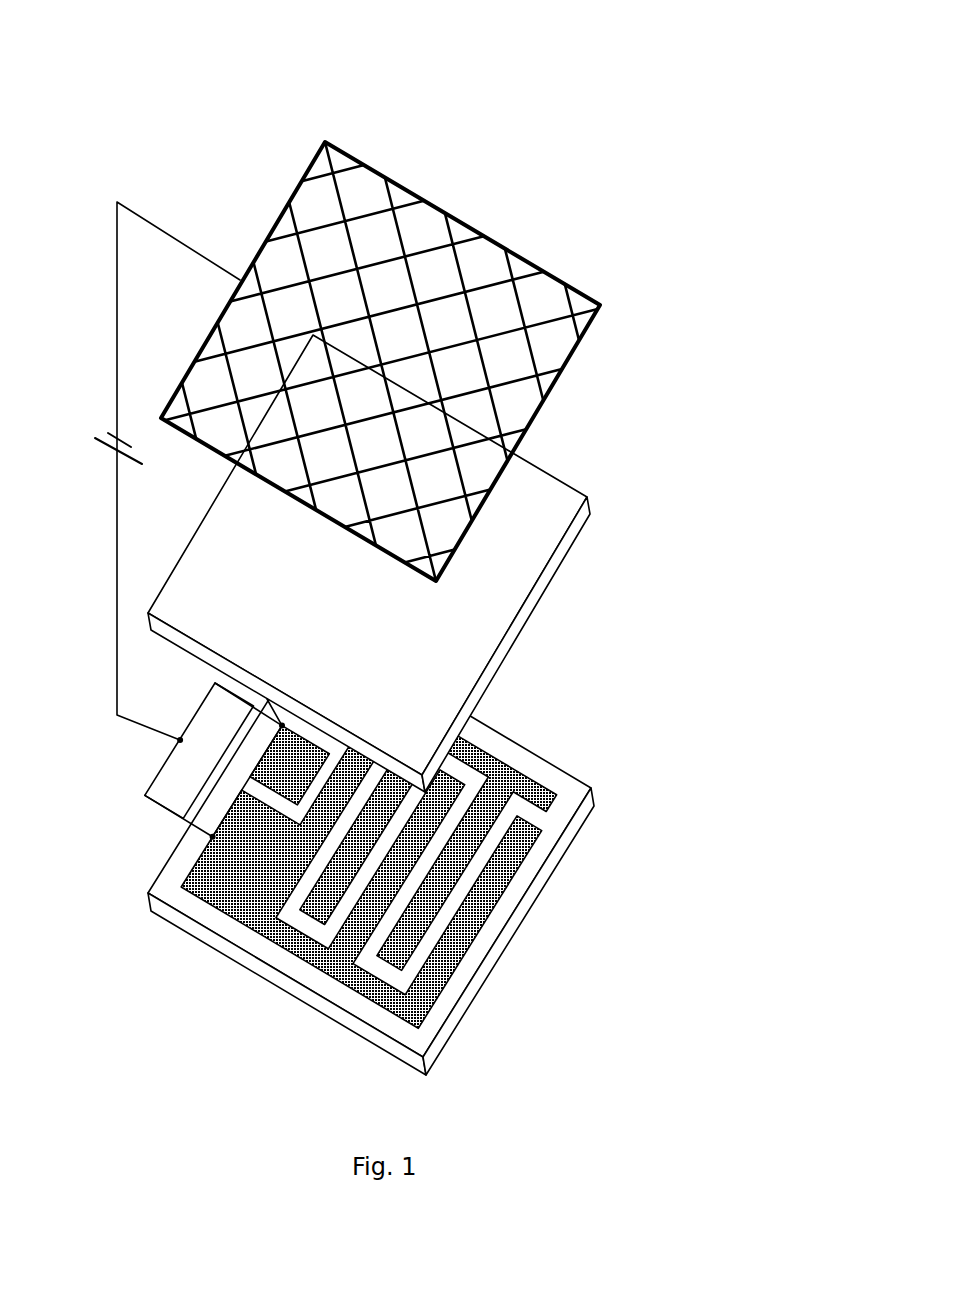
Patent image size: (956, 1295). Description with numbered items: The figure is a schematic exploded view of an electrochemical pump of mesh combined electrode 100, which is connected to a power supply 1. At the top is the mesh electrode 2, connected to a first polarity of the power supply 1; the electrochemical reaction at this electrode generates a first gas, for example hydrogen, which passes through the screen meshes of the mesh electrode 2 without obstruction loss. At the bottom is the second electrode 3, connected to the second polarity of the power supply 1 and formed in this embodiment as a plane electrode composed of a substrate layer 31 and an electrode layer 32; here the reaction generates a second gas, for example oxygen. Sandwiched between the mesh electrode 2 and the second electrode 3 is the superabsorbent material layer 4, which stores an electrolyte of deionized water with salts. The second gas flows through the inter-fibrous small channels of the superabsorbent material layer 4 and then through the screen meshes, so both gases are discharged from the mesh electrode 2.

The electrochemical pump of mesh combined electrode 100 is at (508, 50).
The power supply 1 is at (100, 438).
The mesh electrode 2 is at (430, 204).
The second electrode 3 is at (653, 742).
The substrate layer 31 is at (560, 762).
The electrode layer 32 is at (487, 912).
The superabsorbent material layer 4 is at (540, 470).